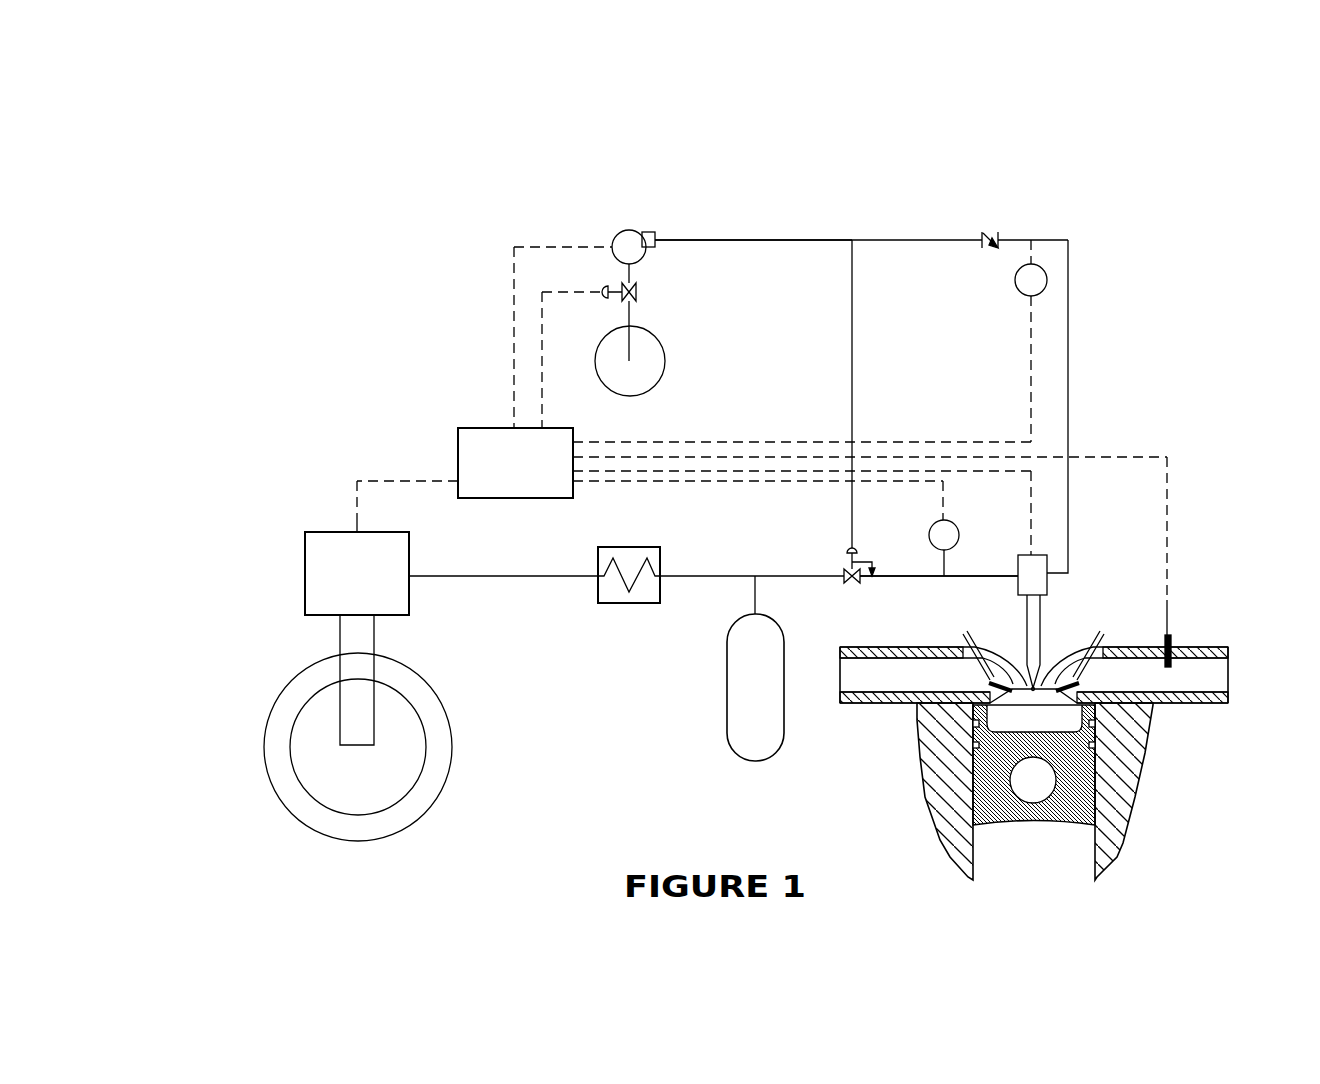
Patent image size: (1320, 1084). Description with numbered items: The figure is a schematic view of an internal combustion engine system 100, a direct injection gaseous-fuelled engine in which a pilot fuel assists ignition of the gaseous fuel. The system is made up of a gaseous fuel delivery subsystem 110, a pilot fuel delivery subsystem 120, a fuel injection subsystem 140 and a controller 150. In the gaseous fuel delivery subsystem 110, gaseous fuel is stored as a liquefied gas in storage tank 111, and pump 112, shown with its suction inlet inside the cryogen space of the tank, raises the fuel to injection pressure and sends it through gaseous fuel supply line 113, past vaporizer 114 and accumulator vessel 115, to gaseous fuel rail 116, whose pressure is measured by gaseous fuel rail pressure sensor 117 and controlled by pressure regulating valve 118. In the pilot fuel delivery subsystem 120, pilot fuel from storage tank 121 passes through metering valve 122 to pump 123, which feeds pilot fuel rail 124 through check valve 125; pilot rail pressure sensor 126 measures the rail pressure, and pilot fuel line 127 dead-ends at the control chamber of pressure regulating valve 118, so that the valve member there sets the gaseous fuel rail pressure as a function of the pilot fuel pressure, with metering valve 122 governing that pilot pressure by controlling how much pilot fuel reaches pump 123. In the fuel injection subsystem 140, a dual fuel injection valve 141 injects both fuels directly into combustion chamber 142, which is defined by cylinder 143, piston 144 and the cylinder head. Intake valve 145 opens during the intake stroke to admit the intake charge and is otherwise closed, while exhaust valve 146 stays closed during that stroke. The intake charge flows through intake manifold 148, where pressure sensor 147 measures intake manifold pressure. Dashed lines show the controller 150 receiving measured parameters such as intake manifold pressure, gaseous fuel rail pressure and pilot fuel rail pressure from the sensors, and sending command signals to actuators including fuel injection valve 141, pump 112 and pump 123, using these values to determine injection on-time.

The internal combustion engine system 100 is at (358, 230).
The gaseous fuel delivery subsystem 110 is at (282, 453).
The storage tank 111 is at (340, 771).
The pump 112 is at (340, 576).
The gaseous fuel supply line 113 is at (457, 578).
The vaporizer 114 is at (630, 593).
The accumulator vessel 115 is at (748, 699).
The gaseous fuel rail 116 is at (917, 577).
The gaseous fuel rail pressure sensor 117 is at (949, 526).
The pressure regulating valve 118 is at (845, 572).
The pilot fuel delivery subsystem 120 is at (575, 178).
The storage tank 121 is at (607, 357).
The metering valve 122 is at (622, 289).
The pump 123 is at (623, 243).
The pilot fuel rail 124 is at (762, 238).
The check valve 125 is at (984, 235).
The pilot rail pressure sensor 126 is at (1034, 284).
The pilot fuel line 127 is at (852, 346).
The fuel injection subsystem 140 is at (1083, 605).
The fuel injection valve 141 is at (1032, 603).
The combustion chamber 142 is at (1033, 711).
The cylinder 143 is at (922, 717).
The piston 144 is at (995, 752).
The intake valve 145 is at (1070, 685).
The exhaust valve 146 is at (1002, 692).
The pressure sensor 147 is at (1172, 640).
The intake manifold 148 is at (1213, 697).
The controller 150 is at (482, 443).